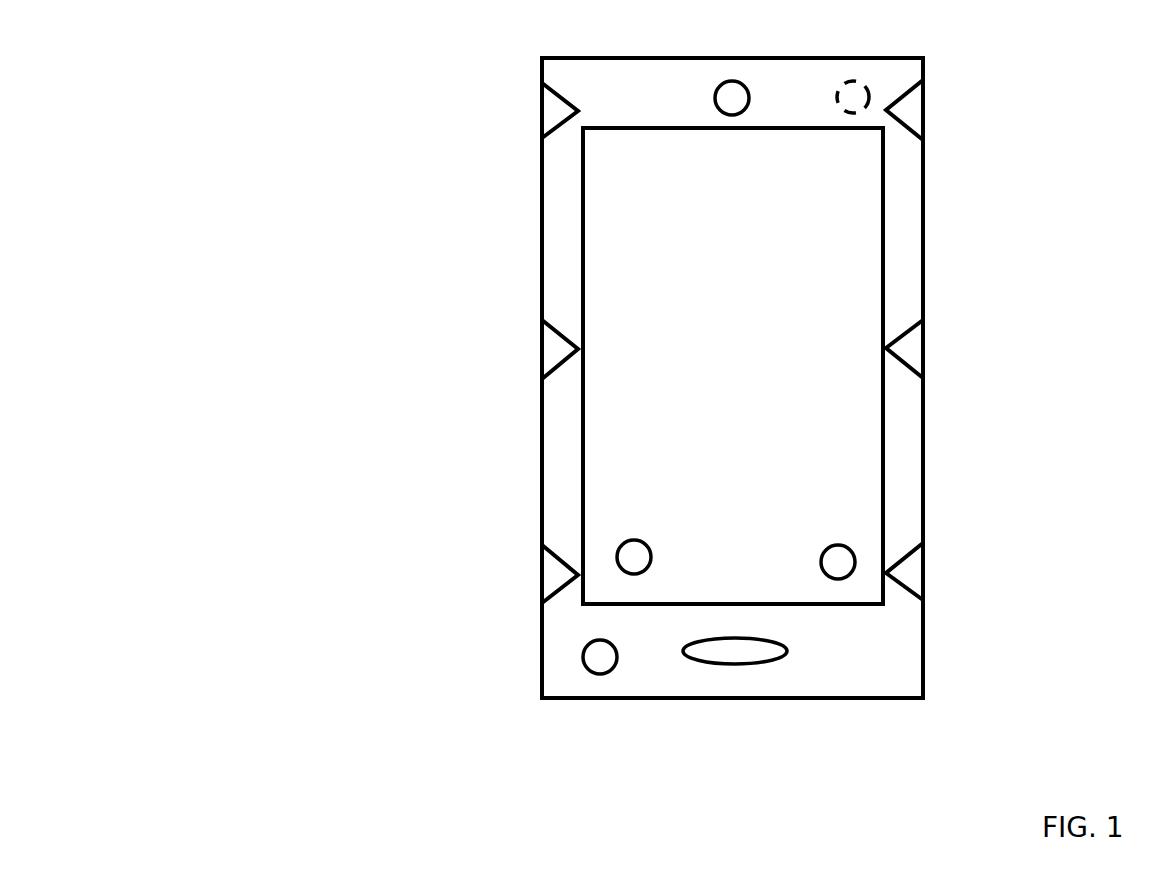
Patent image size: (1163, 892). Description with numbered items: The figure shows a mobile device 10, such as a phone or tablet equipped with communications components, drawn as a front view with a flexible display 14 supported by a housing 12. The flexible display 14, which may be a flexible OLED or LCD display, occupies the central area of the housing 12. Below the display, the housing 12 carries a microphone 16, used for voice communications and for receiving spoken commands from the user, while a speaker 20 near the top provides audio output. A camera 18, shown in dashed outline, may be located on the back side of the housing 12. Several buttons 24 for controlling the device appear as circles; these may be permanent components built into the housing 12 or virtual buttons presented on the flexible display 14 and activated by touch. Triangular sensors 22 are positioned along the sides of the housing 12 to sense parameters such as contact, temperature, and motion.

The mobile device 10 is at (412, 80).
The housing 12 is at (542, 243).
The flexible display 14 is at (760, 310).
The microphone 16 is at (720, 665).
The camera 18 is at (868, 88).
The speaker 20 is at (733, 80).
The sensors 22 is at (542, 137).
The buttons 24 is at (615, 550).